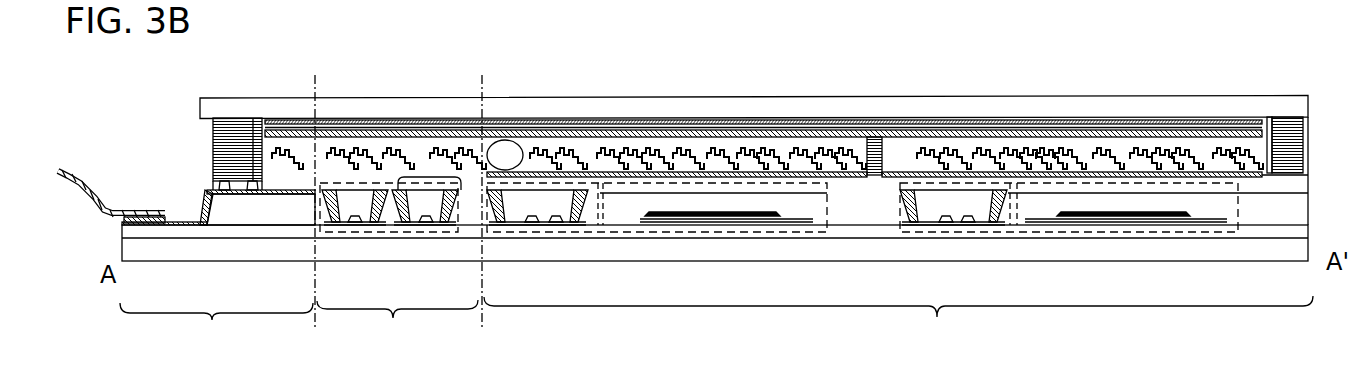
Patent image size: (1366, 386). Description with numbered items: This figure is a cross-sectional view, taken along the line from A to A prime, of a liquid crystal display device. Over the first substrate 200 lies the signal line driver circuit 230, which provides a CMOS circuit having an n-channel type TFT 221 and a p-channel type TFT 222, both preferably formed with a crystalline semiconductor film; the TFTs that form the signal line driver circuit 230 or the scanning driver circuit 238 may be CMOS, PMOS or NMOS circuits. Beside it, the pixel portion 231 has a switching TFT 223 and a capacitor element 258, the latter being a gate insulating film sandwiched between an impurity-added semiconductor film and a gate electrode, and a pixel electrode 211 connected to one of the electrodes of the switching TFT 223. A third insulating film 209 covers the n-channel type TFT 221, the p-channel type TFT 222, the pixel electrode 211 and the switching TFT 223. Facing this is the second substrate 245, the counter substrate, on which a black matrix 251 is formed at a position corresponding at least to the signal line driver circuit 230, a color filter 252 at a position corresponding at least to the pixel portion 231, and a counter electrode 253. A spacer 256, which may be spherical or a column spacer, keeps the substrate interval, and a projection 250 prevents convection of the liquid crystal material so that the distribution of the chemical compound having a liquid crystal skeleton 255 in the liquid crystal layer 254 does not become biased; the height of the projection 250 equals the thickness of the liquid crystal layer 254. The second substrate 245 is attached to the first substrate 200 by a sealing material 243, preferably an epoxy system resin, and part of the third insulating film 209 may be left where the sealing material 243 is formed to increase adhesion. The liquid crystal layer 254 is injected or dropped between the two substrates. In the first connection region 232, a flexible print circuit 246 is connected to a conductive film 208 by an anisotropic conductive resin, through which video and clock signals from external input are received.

The first substrate 200 is at (882, 252).
The conductive film 208 is at (207, 197).
The third insulating film 209 is at (258, 130).
The pixel electrode 211 is at (668, 165).
The n-channel type TFT 221 is at (350, 233).
The p-channel type TFT 222 is at (425, 233).
The switching TFT 223 is at (538, 237).
The signal line driver circuit 230 is at (397, 324).
The pixel portion 231 is at (898, 335).
The first connection region 232 is at (216, 331).
The scanning driver circuit 238 is at (937, 6).
The sealing material 243 is at (230, 128).
The second substrate 245 is at (470, 102).
The flexible print circuit 246 is at (78, 176).
The projection 250 is at (885, 155).
The black matrix 251 is at (345, 122).
The color filter 252 is at (797, 122).
The counter electrode 253 is at (653, 128).
The liquid crystal layer 254 is at (1050, 152).
The chemical compound having a liquid crystal skeleton 255 is at (1008, 155).
The spacer 256 is at (505, 150).
The capacitor element 258 is at (783, 233).